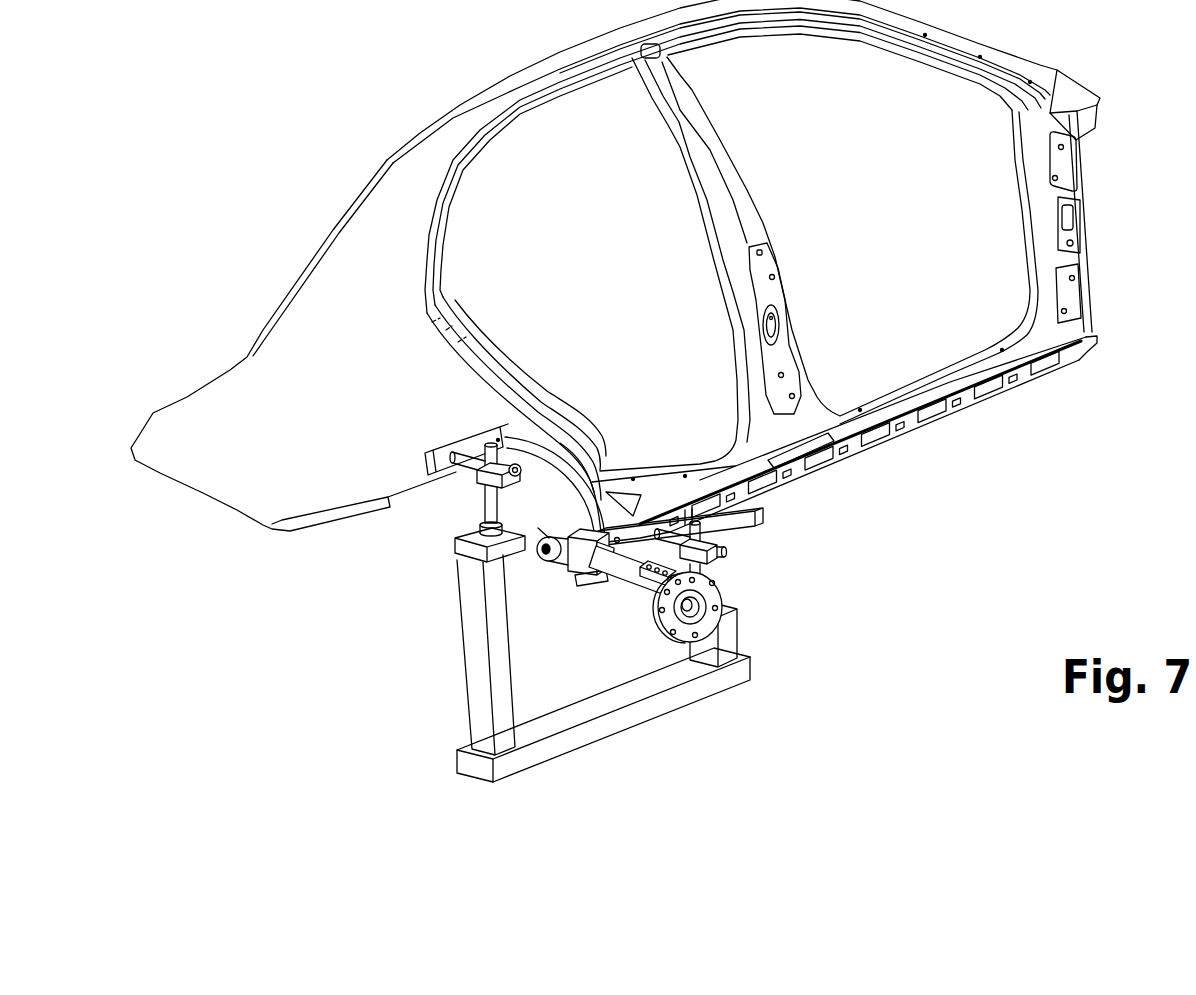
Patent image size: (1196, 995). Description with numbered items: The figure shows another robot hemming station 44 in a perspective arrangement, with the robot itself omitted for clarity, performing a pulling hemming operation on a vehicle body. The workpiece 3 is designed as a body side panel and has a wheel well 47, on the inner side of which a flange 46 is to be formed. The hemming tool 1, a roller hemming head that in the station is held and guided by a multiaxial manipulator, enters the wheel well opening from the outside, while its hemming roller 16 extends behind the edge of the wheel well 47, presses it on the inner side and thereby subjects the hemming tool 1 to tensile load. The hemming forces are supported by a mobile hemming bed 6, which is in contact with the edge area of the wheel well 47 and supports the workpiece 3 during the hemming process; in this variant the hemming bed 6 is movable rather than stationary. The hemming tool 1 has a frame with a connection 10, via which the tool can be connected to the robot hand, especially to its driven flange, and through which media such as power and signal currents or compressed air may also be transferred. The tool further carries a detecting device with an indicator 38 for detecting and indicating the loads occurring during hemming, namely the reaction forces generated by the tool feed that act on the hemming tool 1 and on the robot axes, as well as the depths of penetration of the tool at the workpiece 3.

The hemming tool 1 is at (620, 571).
The workpiece 3 is at (420, 180).
The hemming bed 6 is at (565, 451).
The connection 10 is at (717, 590).
The hemming roller 16 is at (593, 520).
The indicator 38 is at (650, 584).
The robot hemming station 44 is at (827, 545).
The flange 46 is at (597, 468).
The wheel well 47 is at (537, 430).